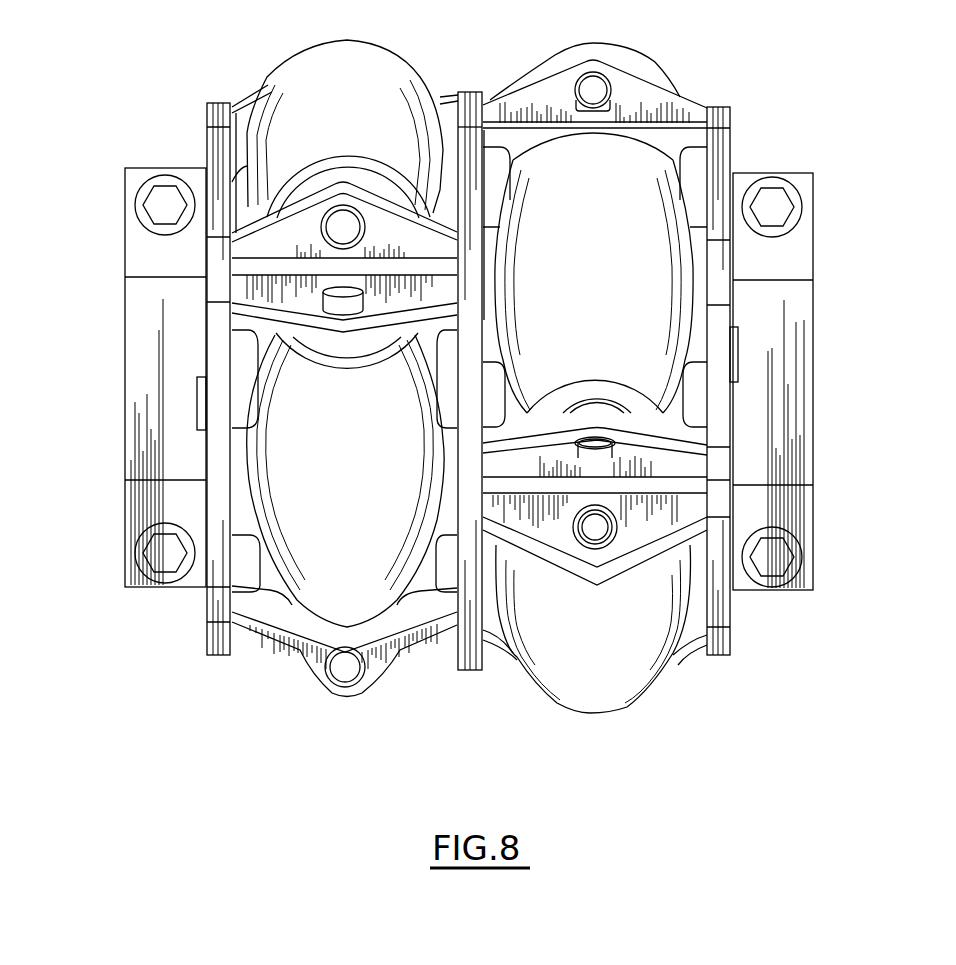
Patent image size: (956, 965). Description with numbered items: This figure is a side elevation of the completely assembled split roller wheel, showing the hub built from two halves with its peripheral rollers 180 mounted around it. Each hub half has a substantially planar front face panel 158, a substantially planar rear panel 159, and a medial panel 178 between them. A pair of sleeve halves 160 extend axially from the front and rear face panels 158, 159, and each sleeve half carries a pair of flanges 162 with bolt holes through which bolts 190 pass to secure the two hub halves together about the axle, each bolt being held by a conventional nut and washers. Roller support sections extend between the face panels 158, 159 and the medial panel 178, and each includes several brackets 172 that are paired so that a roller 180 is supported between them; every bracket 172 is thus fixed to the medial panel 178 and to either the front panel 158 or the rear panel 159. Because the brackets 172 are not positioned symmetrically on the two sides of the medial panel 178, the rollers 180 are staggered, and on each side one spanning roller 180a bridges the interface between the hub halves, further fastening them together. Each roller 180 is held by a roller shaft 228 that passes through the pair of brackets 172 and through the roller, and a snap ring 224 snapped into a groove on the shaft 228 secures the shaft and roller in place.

The front face panel portion 158 is at (213, 604).
The rear panel portion 159 is at (723, 603).
The sleeve halves 160 is at (150, 391).
The flanges 162 is at (150, 262).
The brackets 172 is at (670, 132).
The medial panel portion 178 is at (473, 670).
The rollers 180 is at (608, 341).
The spanning roller 180a is at (342, 62).
The bolts 190 is at (165, 197).
The snap ring 224 is at (595, 530).
The roller shaft 228 is at (340, 672).